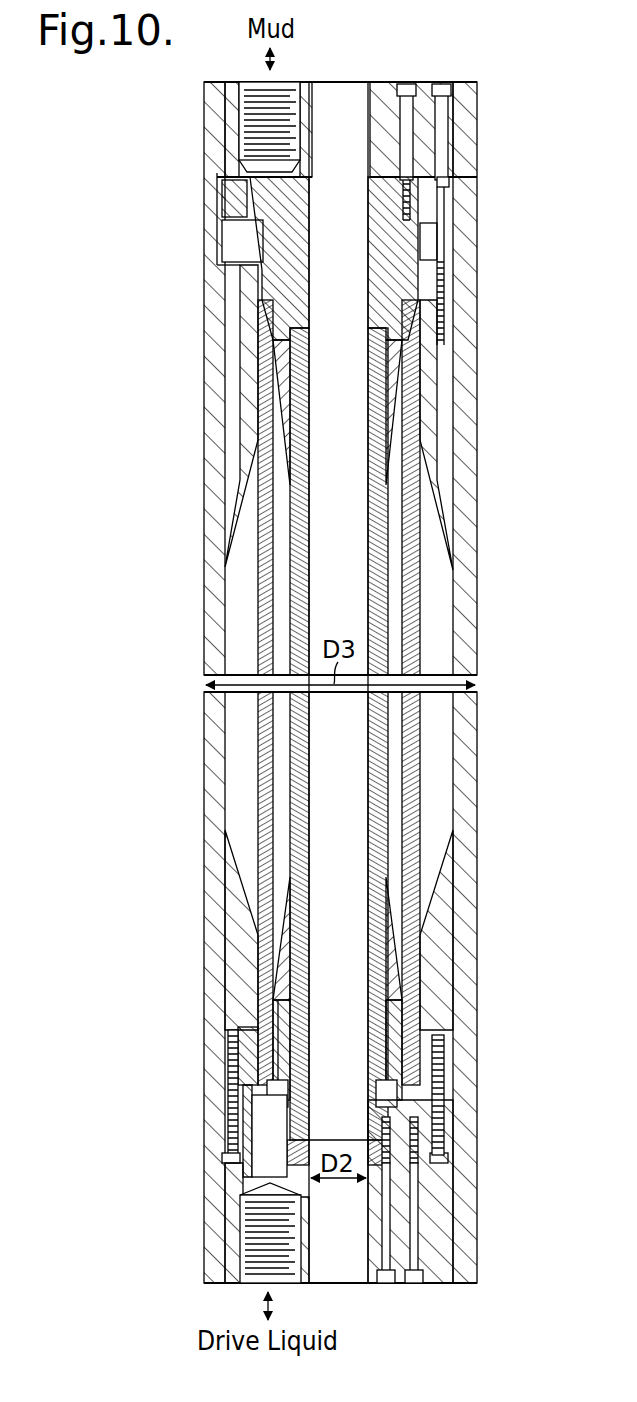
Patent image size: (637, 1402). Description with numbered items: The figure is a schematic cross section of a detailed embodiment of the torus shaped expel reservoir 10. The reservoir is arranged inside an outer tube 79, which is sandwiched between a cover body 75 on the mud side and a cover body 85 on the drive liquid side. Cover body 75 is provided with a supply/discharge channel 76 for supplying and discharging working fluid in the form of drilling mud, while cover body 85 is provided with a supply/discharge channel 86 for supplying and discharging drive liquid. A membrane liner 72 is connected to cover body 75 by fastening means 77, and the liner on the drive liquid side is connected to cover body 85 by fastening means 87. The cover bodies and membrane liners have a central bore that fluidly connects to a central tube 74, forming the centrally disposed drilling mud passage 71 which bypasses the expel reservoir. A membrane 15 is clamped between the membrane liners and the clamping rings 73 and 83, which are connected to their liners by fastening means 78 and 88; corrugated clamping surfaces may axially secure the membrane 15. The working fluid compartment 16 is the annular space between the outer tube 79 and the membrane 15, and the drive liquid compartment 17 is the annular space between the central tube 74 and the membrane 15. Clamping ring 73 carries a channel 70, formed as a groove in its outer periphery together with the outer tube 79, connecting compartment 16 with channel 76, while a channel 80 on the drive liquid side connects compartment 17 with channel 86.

The torus shaped expel reservoir 10 is at (492, 441).
The membrane 15 is at (266, 656).
The working fluid compartment 16 is at (240, 578).
The drive liquid compartment 17 is at (277, 606).
The channel 70 is at (238, 320).
The drilling mud passage 71 is at (345, 100).
The membrane liner 72 is at (252, 268).
The clamping ring 73 is at (250, 370).
The central tube 74 is at (290, 746).
The cover body 75 is at (215, 98).
The supply/discharge channel 76 is at (257, 95).
The fastening means 77 is at (446, 84).
The fastening means 78 is at (446, 240).
The outer tube 79 is at (226, 468).
The channel 80 is at (262, 1022).
The clamping ring 83 is at (233, 974).
The cover body 85 is at (446, 1046).
The supply/discharge channel 86 is at (255, 1265).
The fastening means 87 is at (408, 1280).
The fastening means 88 is at (226, 1136).